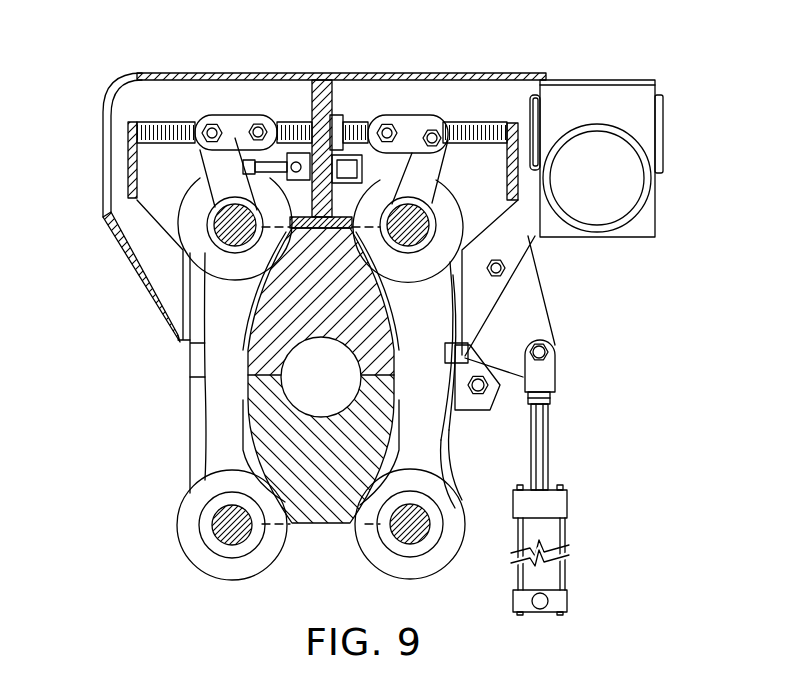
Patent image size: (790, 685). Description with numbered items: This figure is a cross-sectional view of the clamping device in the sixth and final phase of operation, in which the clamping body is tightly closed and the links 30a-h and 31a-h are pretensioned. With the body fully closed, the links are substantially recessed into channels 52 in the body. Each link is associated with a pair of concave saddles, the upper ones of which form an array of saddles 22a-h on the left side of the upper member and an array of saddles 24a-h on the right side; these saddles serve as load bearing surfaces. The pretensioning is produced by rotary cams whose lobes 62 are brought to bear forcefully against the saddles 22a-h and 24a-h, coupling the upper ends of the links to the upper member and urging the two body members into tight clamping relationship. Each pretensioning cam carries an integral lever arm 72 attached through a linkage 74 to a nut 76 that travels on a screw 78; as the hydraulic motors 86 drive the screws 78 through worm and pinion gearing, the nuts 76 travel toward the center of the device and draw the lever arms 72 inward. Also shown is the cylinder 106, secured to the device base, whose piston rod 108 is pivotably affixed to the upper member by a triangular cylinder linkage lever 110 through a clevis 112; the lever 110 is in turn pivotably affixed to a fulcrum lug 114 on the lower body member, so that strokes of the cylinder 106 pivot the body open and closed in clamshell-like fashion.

The saddles 22a-h is at (212, 243).
The saddles 24a-h is at (417, 273).
The links 30a-h is at (210, 360).
The links 31a-h is at (427, 330).
The channels 52 is at (188, 437).
The lobes 62 is at (213, 248).
The lever arm 72 is at (467, 125).
The linkage 74 is at (407, 122).
The nut 76 is at (370, 117).
The screw 78 is at (487, 125).
The hydraulic motors 86 is at (625, 193).
The cylinder 106 is at (557, 505).
The piston rod 108 is at (547, 437).
The triangular cylinder linkage lever 110 is at (535, 328).
The clevis 112 is at (545, 365).
The fulcrum lug 114 is at (478, 392).